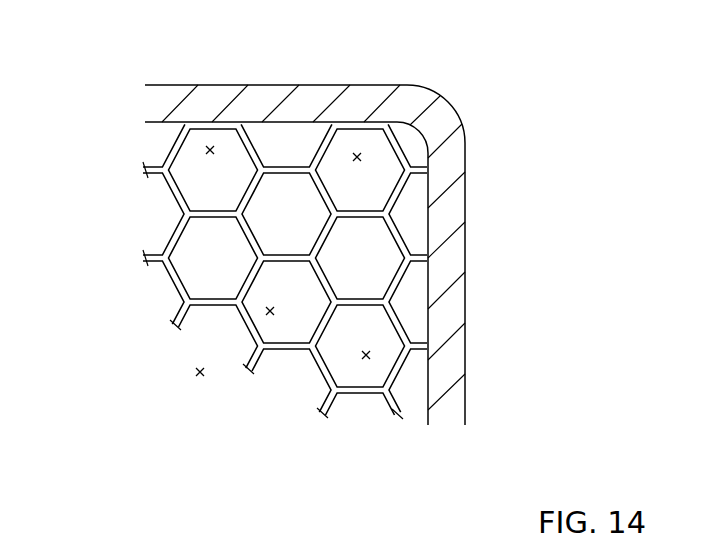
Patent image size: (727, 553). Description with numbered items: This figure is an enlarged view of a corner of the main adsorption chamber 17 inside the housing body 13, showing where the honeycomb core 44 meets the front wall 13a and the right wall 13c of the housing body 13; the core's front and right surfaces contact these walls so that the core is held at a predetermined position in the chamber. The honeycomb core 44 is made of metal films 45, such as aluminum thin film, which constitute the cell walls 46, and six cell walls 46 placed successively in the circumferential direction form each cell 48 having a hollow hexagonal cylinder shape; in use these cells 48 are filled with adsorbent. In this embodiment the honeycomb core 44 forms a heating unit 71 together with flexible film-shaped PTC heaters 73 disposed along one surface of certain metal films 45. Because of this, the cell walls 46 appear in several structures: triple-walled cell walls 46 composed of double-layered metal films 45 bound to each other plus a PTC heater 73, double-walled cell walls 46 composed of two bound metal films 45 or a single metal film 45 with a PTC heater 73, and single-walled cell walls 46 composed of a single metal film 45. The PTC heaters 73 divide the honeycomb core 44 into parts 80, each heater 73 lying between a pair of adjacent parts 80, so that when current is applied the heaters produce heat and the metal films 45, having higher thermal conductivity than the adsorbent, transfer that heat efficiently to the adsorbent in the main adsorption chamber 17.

The housing body 13 is at (346, 219).
The front wall 13a is at (222, 84).
The right wall 13c is at (450, 307).
The main adsorption chamber 17 is at (196, 372).
The honeycomb core 44 is at (287, 141).
The metal film 45 is at (155, 161).
The cell wall 46 is at (176, 287).
The cell 48 is at (209, 146).
The heating unit 71 is at (280, 245).
The PTC heater 73 is at (173, 231).
The part 80 is at (396, 192).